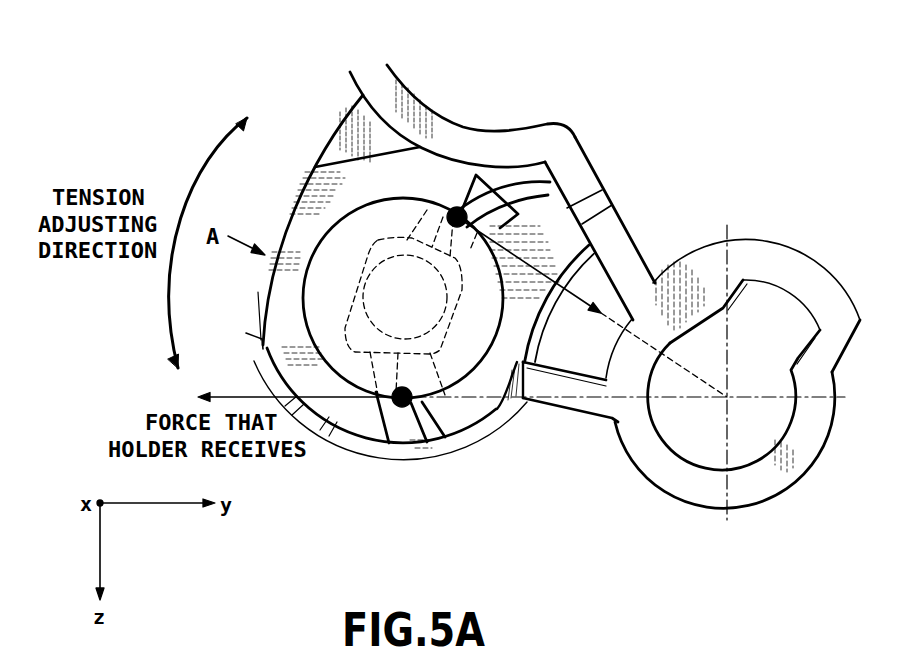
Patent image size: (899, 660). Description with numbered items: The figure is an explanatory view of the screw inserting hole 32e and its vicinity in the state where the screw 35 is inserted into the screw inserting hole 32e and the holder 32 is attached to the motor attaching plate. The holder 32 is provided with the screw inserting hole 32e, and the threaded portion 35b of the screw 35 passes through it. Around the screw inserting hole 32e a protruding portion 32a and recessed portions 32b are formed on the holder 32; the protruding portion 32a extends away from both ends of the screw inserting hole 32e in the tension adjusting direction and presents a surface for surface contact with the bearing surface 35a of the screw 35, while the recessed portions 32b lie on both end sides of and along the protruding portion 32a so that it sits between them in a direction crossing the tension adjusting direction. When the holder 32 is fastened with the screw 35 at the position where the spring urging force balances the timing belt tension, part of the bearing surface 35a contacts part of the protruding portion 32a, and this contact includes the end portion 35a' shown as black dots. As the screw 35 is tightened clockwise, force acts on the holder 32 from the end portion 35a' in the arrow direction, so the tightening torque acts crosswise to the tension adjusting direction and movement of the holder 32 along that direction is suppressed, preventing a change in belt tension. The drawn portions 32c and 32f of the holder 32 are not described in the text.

The holder 32 is at (622, 557).
The protruding portion 32a is at (418, 432).
The recessed portion 32b is at (397, 430).
The holder upper arm 32c is at (445, 170).
The screw inserting hole 32e is at (468, 230).
The holder ring portion 32f is at (733, 397).
The screw 35 is at (316, 253).
The bearing surface 35a is at (447, 209).
The end portion 35a' is at (504, 324).
The threaded portion 35b is at (385, 262).